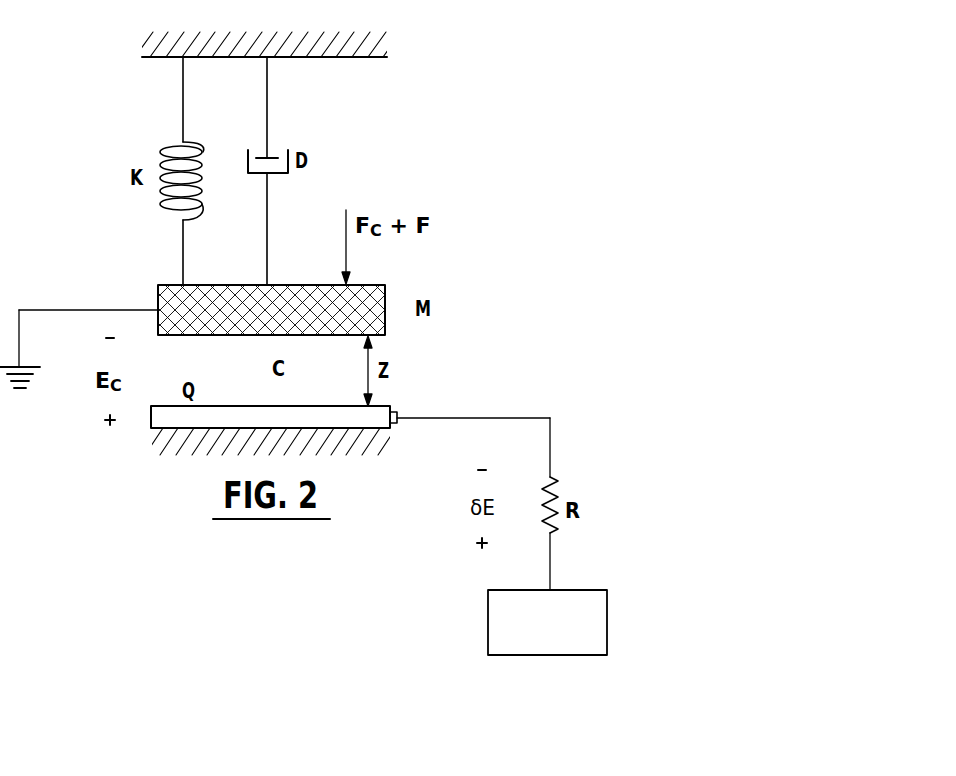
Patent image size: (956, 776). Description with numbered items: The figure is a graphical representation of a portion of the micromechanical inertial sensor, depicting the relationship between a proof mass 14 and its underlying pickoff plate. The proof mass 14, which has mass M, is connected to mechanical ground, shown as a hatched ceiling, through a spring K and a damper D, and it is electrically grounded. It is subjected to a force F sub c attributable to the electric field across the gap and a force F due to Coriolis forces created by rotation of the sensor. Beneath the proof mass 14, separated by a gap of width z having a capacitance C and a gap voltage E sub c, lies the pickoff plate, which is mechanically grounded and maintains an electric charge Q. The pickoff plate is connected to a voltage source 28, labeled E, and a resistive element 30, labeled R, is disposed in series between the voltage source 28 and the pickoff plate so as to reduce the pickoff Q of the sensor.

The proof mass 14 is at (377, 298).
The voltage source 28 is at (582, 589).
The resistive element 30 is at (557, 490).